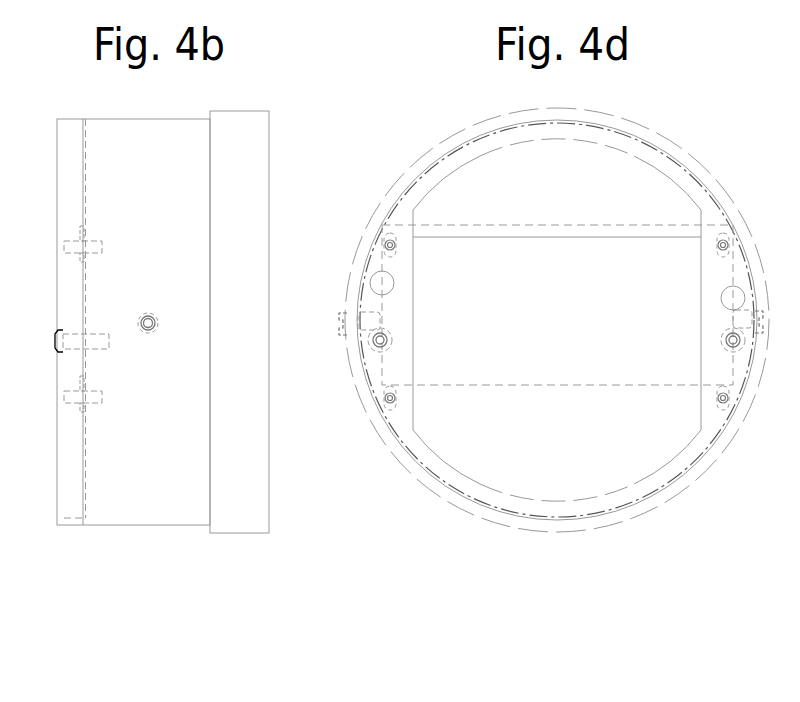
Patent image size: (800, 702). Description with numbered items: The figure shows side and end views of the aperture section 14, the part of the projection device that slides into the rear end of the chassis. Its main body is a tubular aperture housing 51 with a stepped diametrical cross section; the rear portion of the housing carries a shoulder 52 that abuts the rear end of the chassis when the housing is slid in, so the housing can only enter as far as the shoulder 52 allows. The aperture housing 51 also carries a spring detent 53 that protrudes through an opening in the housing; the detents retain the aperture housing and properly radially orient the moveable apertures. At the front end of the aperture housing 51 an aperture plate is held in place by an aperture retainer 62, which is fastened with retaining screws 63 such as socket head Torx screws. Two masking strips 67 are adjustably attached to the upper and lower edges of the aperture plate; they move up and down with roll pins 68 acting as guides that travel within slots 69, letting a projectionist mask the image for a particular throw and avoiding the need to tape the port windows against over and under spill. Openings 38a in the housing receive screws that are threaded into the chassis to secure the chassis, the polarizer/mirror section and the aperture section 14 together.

In FIG. 4B, the aperture section 14 is at (245, 603).
In FIG. 4D, the aperture section 14 is at (686, 566).
In FIG. 4B, the aperture housing 51 is at (121, 527).
In FIG. 4D, the aperture housing 51 is at (500, 523).
In FIG. 4B, the shoulder 52 is at (245, 534).
In FIG. 4B, the spring detent 53 is at (148, 334).
In FIG. 4B, the retaining screw 63 is at (73, 254).
In FIG. 4D, the retaining screw 63 is at (393, 342).
In FIG. 4B, the roll pin 68 is at (55, 341).
In FIG. 4D, the roll pin 68 is at (738, 388).
In FIG. 4D, the opening 38a is at (394, 284).
In FIG. 4D, the masking strip 67 is at (531, 262).
In FIG. 4D, the aperture retainer 62 is at (721, 303).
In FIG. 4D, the slot 69 is at (735, 406).